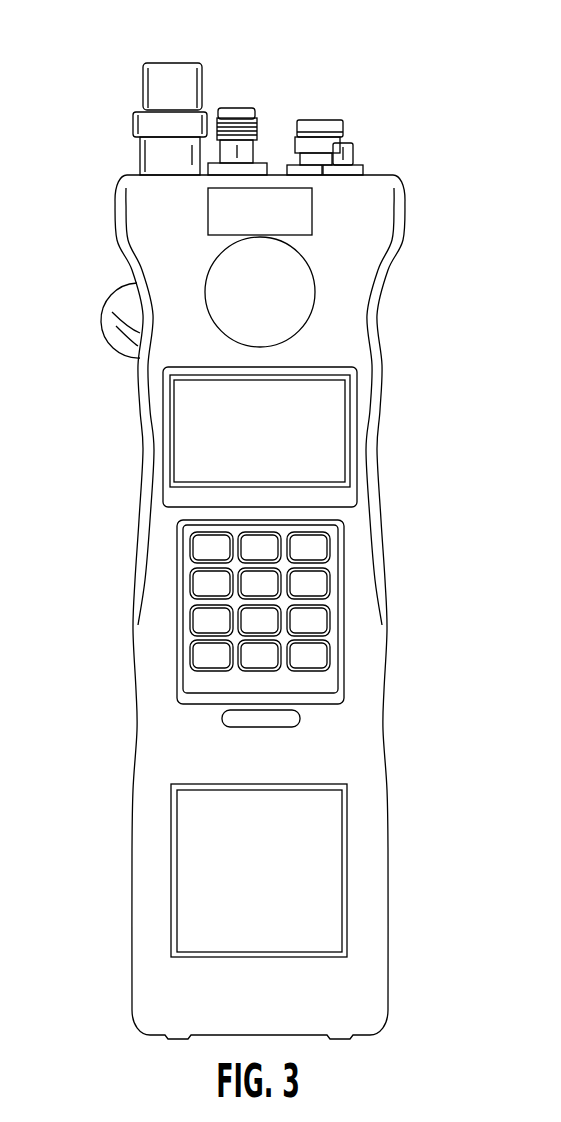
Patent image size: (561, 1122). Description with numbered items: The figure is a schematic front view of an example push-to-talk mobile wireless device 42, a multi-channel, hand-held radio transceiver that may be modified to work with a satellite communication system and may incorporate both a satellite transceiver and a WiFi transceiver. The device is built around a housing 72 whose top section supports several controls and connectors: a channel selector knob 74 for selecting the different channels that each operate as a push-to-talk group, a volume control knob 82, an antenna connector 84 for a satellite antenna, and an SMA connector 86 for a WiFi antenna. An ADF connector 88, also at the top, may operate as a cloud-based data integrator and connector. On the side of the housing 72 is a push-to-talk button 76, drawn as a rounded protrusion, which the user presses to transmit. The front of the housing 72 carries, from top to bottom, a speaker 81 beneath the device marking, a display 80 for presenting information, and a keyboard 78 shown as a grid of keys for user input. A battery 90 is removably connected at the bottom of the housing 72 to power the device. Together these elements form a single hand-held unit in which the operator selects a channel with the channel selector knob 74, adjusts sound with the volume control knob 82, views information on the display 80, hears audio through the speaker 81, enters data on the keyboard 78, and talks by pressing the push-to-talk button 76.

The mobile wireless device 42 is at (423, 278).
The housing 72 is at (360, 647).
The channel selector knob 74 is at (133, 122).
The push-to-talk button 76 is at (118, 315).
The keyboard 78 is at (317, 580).
The display 80 is at (338, 430).
The speaker 81 is at (305, 307).
The volume control knob 82 is at (143, 65).
The antenna connector 84 is at (255, 111).
The SMA connector 86 is at (353, 145).
The ADF connector 88 is at (342, 120).
The battery 90 is at (317, 857).